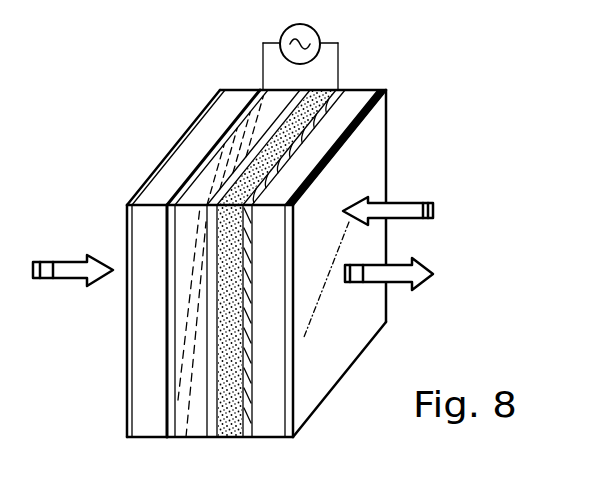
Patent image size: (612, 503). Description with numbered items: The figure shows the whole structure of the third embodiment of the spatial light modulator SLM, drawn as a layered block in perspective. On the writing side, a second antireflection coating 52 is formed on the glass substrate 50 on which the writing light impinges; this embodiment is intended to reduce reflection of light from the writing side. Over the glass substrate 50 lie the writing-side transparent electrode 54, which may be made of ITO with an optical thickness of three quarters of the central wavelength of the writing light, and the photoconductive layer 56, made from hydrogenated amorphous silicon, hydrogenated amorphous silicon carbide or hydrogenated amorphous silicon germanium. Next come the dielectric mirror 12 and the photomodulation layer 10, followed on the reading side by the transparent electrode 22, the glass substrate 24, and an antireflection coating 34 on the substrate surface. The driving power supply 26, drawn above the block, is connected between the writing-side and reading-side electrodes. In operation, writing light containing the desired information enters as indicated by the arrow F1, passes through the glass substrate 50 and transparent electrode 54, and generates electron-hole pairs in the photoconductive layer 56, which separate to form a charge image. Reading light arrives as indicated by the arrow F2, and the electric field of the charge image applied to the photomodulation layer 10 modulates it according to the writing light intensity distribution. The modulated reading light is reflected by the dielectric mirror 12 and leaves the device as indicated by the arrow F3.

The photomodulation layer 10 is at (230, 439).
The dielectric mirror 12 is at (213, 437).
The transparent electrode 22 is at (246, 437).
The glass substrate 24 is at (276, 430).
The driving power supply 26 is at (314, 29).
The antireflection coating 34 is at (292, 373).
The glass substrate 50 is at (145, 383).
The second antireflection coating 52 is at (127, 413).
The transparent electrode 54 is at (170, 437).
The photoconductive layer 56 is at (198, 437).
The spatial light modulator SLM is at (164, 128).
The writing light arrow F1 is at (68, 266).
The reading light arrow F2 is at (408, 208).
The reflected reading light arrow F3 is at (400, 274).